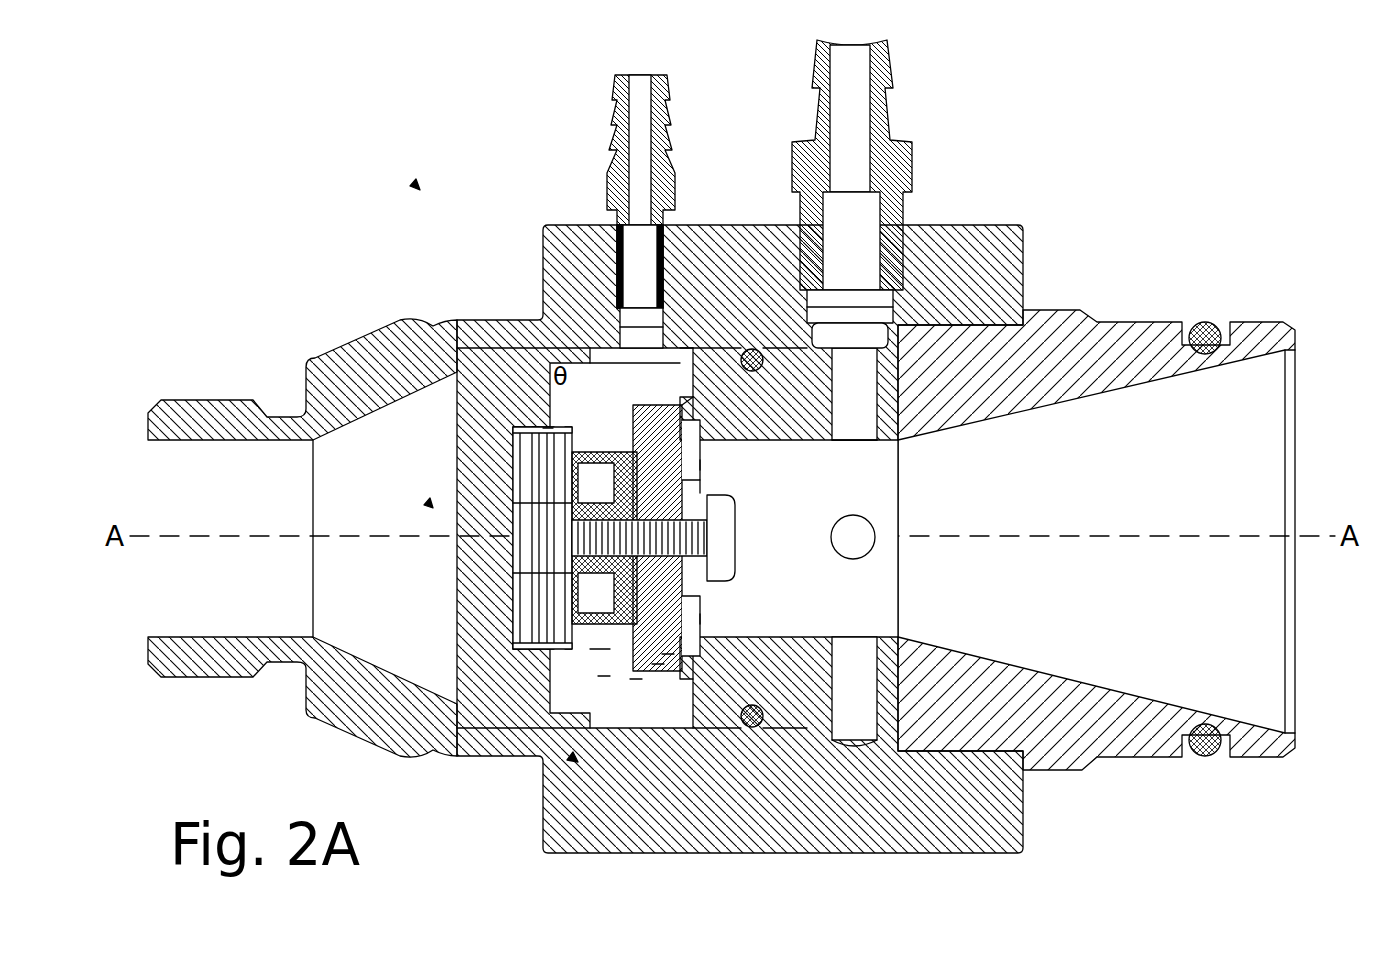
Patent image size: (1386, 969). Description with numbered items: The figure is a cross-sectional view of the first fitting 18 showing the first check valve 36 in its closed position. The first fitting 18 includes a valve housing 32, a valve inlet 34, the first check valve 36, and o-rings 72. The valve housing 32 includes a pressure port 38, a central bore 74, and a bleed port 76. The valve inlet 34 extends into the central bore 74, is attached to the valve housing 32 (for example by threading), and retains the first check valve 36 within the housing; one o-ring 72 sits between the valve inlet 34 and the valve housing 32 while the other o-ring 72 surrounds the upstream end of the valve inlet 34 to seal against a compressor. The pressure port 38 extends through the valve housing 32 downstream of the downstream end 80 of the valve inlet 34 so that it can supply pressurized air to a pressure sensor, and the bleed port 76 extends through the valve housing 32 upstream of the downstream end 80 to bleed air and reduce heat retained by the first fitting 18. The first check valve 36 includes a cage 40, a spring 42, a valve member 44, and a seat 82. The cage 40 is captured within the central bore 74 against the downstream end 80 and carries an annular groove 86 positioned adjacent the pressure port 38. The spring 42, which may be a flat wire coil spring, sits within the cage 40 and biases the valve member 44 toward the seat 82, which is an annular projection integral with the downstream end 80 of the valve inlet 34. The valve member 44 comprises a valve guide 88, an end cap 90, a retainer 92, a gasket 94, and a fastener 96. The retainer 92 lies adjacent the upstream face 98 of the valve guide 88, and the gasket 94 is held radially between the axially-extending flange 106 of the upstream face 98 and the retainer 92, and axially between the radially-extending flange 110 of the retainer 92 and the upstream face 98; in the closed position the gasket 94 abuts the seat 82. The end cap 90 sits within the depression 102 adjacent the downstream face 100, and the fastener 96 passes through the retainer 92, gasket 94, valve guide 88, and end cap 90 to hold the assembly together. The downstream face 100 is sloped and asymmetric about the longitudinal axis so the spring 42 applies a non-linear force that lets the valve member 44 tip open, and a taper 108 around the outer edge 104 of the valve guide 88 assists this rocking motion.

The first fitting 18 is at (420, 190).
The valve housing 32 is at (370, 362).
The valve inlet 34 is at (1108, 335).
The first check valve 36 is at (573, 752).
The pressure port 38 is at (640, 335).
The cage 40 is at (493, 385).
The spring 42 is at (548, 430).
The valve member 44 is at (562, 432).
The o-rings 72 is at (752, 349).
The central bore 74 is at (433, 508).
The bleed port 76 is at (890, 302).
The downstream end 80 is at (693, 410).
The seat 82 is at (700, 619).
The annular groove 86 is at (680, 350).
The valve guide 88 is at (648, 668).
The end cap 90 is at (595, 652).
The retainer 92 is at (703, 487).
The gasket 94 is at (668, 656).
The fastener 96 is at (712, 542).
The upstream face 98 is at (635, 380).
The downstream face 100 is at (600, 654).
The depression 102 is at (636, 682).
The outer edge 104 is at (860, 411).
The axially-extending flange 106 is at (657, 666).
The taper 108 is at (603, 679).
The radially-extending flange 110 is at (703, 465).